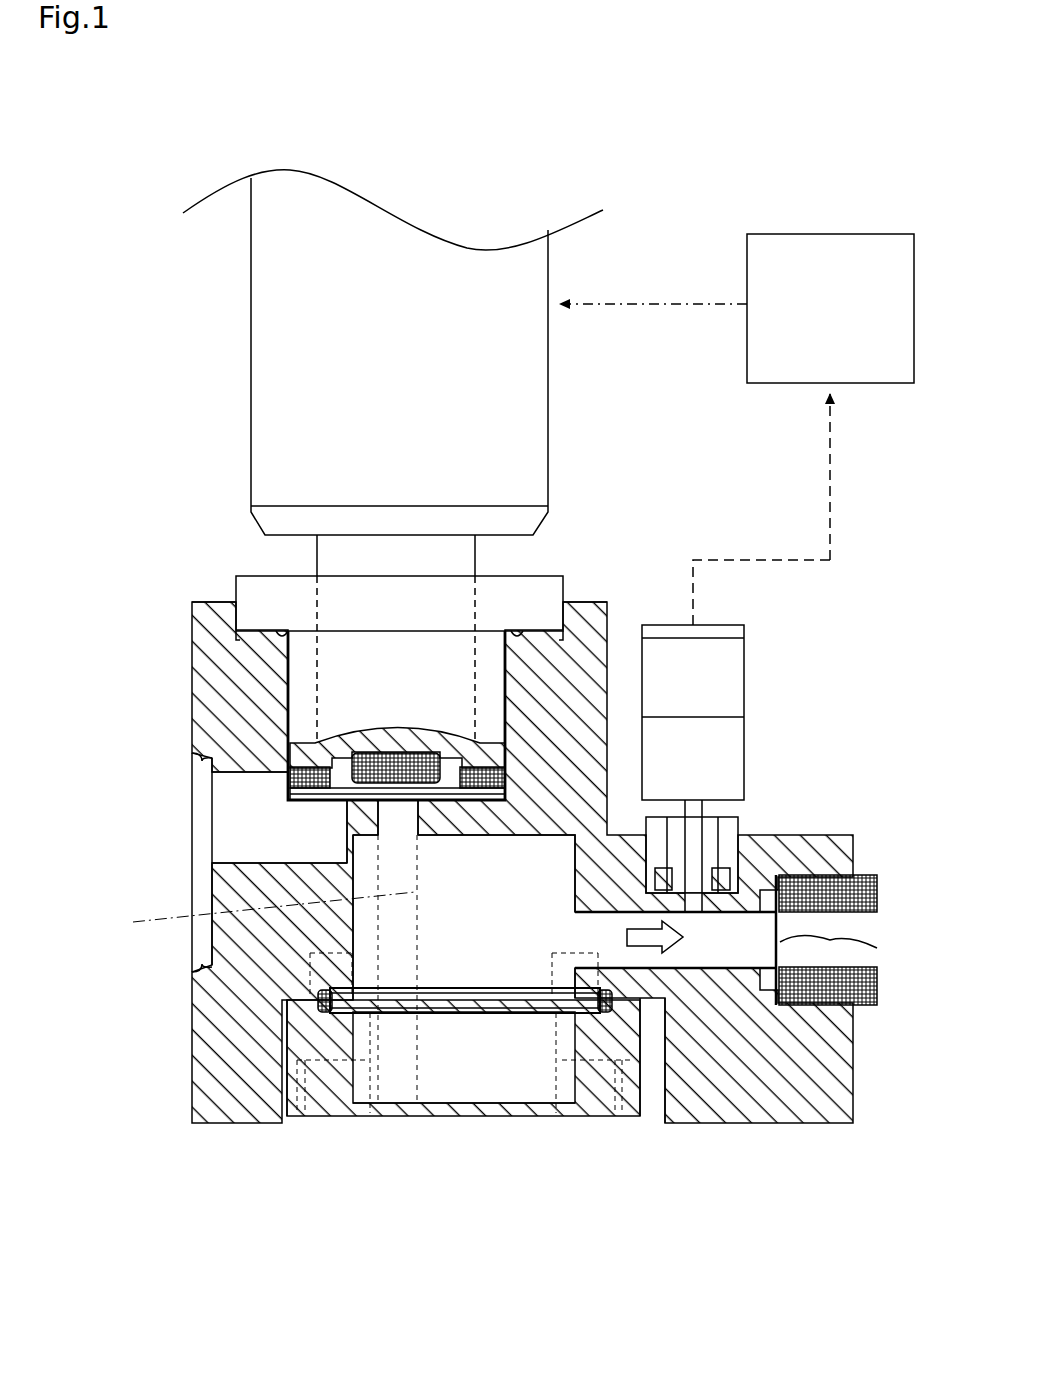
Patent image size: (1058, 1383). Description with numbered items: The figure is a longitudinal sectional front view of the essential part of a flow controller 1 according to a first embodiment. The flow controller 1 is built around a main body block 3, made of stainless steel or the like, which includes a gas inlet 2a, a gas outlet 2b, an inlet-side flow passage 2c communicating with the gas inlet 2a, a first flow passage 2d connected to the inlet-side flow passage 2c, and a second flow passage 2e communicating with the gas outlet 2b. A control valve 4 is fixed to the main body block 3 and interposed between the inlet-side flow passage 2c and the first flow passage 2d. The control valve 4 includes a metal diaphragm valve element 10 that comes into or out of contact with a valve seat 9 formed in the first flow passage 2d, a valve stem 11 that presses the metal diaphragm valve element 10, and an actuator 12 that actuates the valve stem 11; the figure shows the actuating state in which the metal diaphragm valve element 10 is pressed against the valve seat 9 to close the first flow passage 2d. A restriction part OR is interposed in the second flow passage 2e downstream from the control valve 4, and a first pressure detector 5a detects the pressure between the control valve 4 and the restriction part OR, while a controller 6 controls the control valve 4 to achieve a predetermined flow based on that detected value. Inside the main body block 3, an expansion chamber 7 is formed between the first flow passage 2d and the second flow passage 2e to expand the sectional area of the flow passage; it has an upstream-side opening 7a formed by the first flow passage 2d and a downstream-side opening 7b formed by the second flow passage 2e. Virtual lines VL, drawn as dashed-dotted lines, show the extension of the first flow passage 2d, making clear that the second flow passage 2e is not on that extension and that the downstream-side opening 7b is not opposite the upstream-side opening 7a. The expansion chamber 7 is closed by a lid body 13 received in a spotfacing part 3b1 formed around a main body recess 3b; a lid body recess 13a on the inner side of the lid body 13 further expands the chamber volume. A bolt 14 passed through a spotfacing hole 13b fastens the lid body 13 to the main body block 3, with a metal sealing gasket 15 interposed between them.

The flow controller 1 is at (676, 224).
The actuator 12 is at (251, 384).
The control valve 4 is at (222, 483).
The controller 6 is at (747, 357).
The main body recess 3b is at (505, 847).
The first pressure detector 5a is at (752, 748).
The valve stem 11 is at (337, 747).
The metal diaphragm valve element 10 is at (300, 768).
The valve seat 9 is at (345, 802).
The first flow passage 2d is at (342, 828).
The gas inlet 2a is at (212, 820).
The inlet-side flow passage 2c is at (253, 862).
The virtual lines VL is at (257, 917).
The upstream-side opening 7a is at (412, 835).
The downstream-side opening 7b is at (575, 940).
The expansion chamber 7 is at (425, 952).
The gas outlet 2b is at (880, 933).
The restriction part OR is at (877, 948).
The main body block 3 is at (220, 1058).
The spotfacing hole 13b is at (308, 1117).
The bolt 14 is at (335, 1117).
The metal sealing gasket 15 is at (373, 1014).
The lid body 13 is at (462, 1118).
The lid body recess 13a is at (477, 1100).
The spotfacing part 3b1 is at (652, 1003).
The second flow passage 2e is at (690, 962).